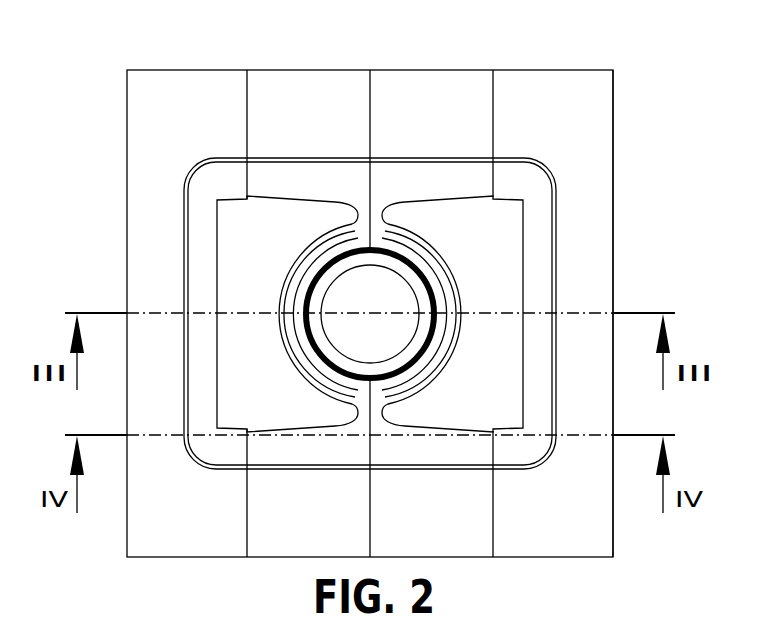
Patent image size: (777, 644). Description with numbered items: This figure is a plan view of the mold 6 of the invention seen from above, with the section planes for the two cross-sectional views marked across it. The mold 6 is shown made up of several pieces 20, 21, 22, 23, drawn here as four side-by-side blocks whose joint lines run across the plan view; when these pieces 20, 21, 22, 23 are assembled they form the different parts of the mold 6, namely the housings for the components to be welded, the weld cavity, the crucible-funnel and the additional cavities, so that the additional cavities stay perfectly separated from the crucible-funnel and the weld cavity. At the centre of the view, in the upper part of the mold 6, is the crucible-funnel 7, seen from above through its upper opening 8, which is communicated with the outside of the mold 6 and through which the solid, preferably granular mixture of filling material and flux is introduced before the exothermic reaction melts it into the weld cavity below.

The mold 6 is at (634, 142).
The crucible-funnel 7 is at (381, 288).
The upper opening 8 is at (418, 303).
The piece 20 is at (170, 95).
The piece 21 is at (553, 95).
The piece 22 is at (290, 107).
The piece 23 is at (423, 92).